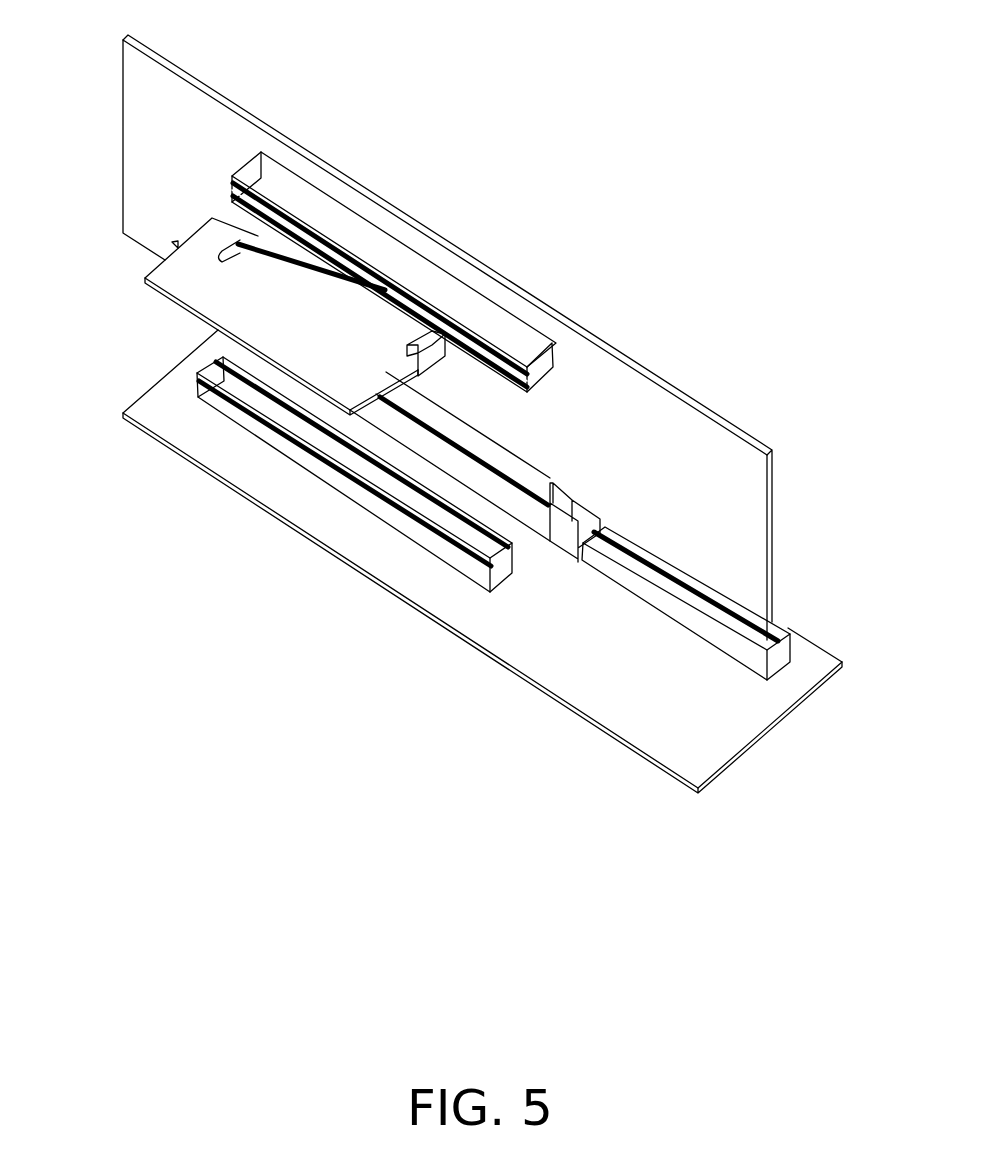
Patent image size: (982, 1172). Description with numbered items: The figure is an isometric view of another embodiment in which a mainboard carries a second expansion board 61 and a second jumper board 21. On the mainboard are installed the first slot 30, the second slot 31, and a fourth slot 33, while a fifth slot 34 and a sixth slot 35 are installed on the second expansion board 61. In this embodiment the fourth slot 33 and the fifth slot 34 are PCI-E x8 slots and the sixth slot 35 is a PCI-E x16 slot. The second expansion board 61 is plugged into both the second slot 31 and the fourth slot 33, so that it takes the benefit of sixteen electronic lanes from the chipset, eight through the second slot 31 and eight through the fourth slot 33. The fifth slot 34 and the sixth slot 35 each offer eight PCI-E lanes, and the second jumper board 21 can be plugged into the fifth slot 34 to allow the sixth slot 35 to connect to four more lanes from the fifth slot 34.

The second jumper board 21 is at (210, 292).
The first slot 30 is at (470, 558).
The second slot 31 is at (555, 520).
The fourth slot 33 is at (775, 664).
The fifth slot 34 is at (255, 233).
The sixth slot 35 is at (442, 300).
The second expansion board 61 is at (630, 423).